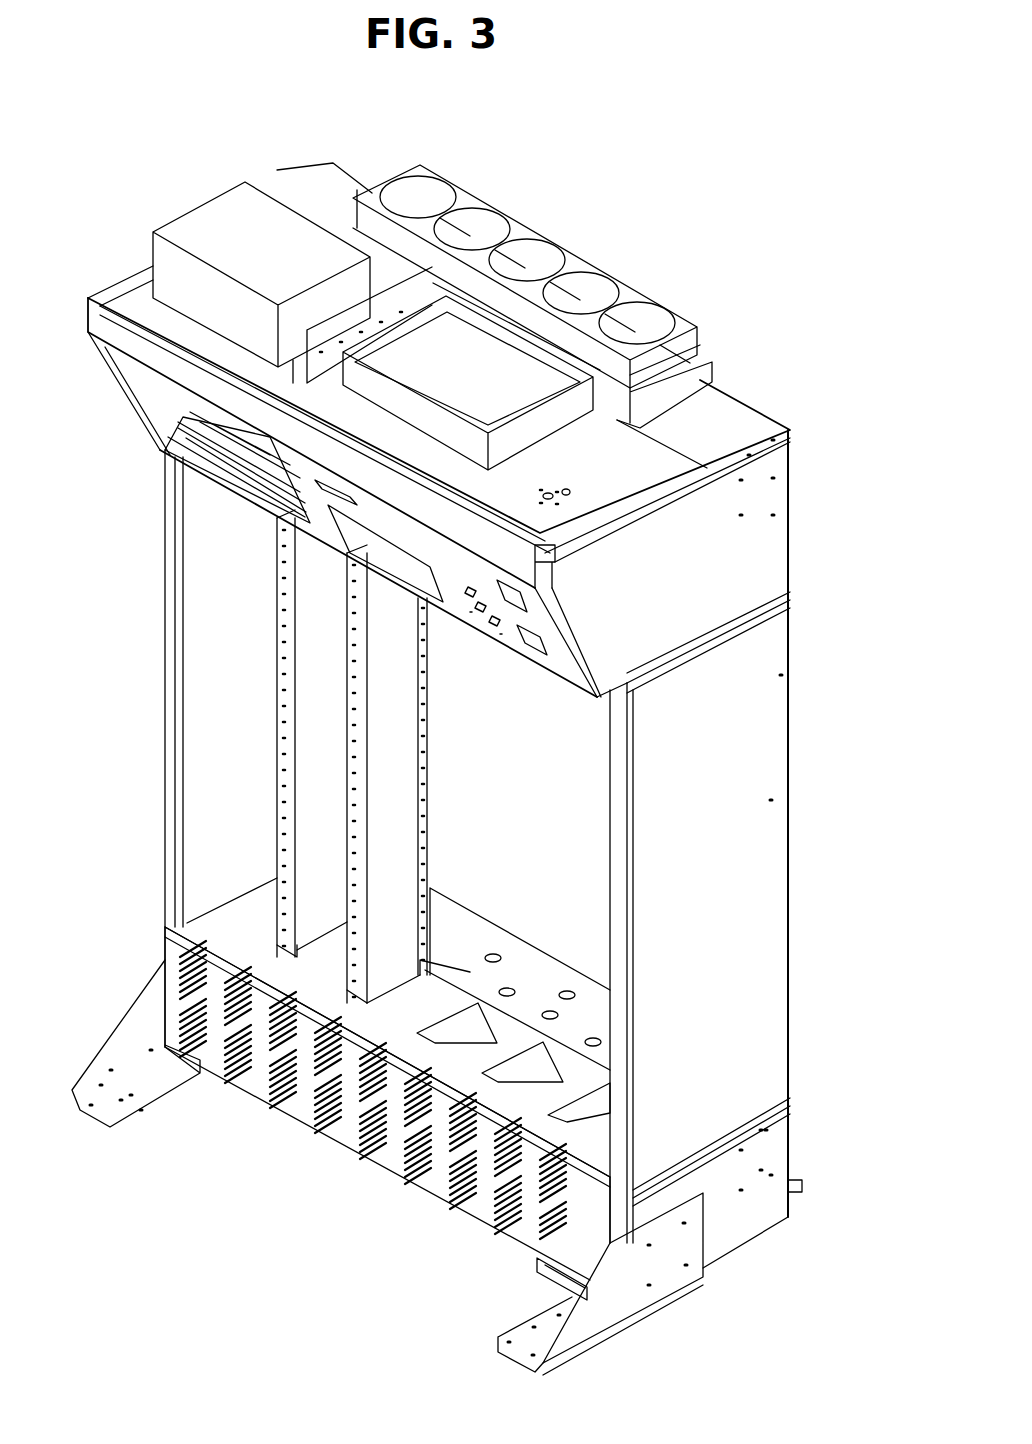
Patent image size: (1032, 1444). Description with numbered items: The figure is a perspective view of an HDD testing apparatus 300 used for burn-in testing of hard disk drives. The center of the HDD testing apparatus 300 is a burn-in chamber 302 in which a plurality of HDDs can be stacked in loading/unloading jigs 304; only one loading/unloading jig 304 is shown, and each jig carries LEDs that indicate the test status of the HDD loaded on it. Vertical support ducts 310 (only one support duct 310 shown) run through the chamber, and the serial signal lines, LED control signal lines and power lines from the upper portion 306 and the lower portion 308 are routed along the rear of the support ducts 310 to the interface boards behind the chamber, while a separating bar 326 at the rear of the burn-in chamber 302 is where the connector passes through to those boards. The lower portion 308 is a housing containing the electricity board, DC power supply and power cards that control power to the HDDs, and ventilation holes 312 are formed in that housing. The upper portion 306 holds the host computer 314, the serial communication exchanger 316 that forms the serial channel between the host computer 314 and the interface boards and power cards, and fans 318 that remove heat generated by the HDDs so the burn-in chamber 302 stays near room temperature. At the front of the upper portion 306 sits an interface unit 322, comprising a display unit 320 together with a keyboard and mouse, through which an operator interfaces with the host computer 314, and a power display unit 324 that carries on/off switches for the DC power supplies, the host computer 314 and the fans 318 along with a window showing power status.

The HDD testing apparatus 300 is at (154, 1313).
The burn-in chamber 302 is at (203, 741).
The loading/unloading jig 304 is at (290, 943).
The upper portion 306 is at (775, 543).
The lower portion 308 is at (740, 1227).
The support duct 310 is at (280, 818).
The ventilation holes 312 is at (458, 1000).
The host computer 314 is at (238, 200).
The serial communication exchanger 316 is at (553, 423).
The fan 318 is at (628, 293).
The display unit 320 is at (220, 423).
The interface unit 322 is at (387, 550).
The power display unit 324 is at (537, 653).
The separating bar 326 is at (443, 970).